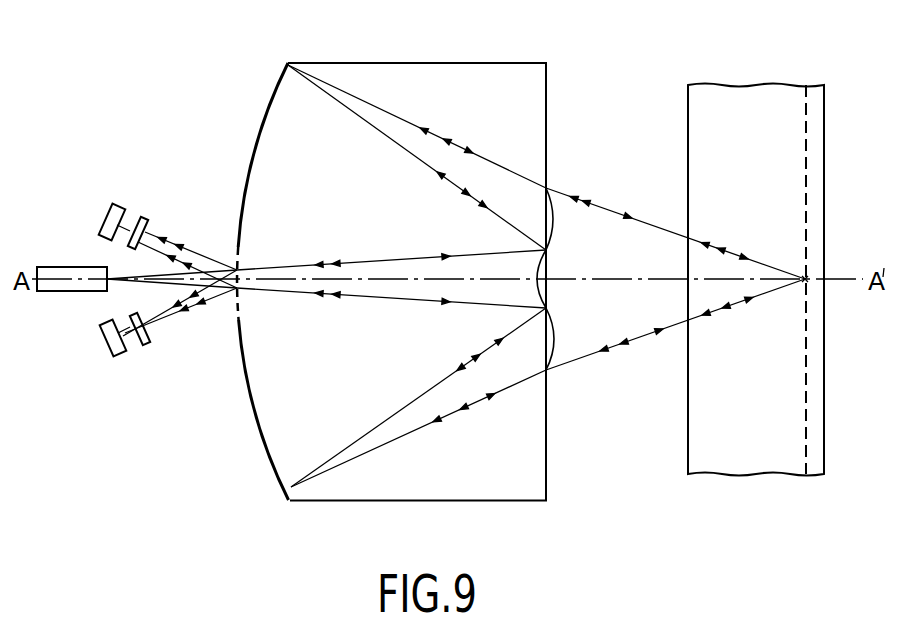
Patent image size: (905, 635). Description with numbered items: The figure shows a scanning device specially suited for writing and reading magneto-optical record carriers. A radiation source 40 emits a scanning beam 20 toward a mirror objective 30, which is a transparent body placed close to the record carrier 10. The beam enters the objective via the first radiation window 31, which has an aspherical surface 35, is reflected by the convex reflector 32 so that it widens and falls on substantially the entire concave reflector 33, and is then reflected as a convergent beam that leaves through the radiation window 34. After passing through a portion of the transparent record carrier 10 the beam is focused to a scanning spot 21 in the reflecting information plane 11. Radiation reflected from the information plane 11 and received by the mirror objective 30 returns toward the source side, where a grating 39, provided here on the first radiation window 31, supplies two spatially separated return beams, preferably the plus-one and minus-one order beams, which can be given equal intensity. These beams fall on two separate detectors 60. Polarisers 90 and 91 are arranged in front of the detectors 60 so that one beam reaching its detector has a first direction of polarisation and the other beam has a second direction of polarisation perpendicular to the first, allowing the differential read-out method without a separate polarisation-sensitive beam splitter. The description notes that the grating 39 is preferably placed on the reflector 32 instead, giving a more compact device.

The mirror objective 30 is at (539, 34).
The concave reflector 33 is at (263, 122).
The first radiation window 31 is at (230, 233).
The grating 39 is at (230, 316).
The aspherical surface 35 is at (562, 216).
The convex reflector 32 is at (547, 267).
The radiation window 34 is at (553, 288).
The radiation source 40 is at (58, 293).
The detectors 60 is at (110, 205).
The polariser 91 is at (142, 216).
The polariser 90 is at (148, 346).
The scanning beam 20 is at (197, 356).
The scanning spot 21 is at (805, 277).
The optical record carrier 10 is at (777, 465).
The information plane 11 is at (808, 350).